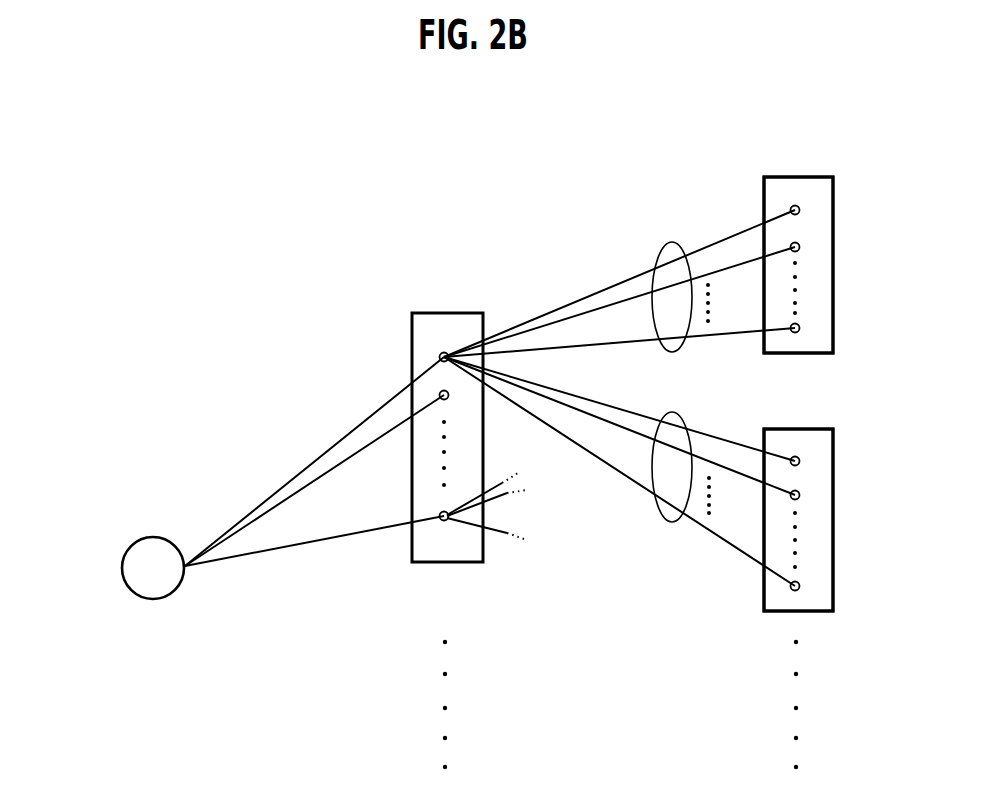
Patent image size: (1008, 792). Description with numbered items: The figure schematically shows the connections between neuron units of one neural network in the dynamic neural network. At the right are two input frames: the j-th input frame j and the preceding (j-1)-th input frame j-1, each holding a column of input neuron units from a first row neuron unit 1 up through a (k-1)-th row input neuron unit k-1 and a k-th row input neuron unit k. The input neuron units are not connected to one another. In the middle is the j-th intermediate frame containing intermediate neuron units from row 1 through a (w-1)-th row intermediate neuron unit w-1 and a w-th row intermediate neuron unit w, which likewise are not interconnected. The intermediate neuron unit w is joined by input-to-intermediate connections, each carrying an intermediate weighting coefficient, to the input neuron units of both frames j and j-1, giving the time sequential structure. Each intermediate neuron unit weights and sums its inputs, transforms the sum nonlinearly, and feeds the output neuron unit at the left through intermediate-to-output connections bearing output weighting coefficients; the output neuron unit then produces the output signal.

The w-th row intermediate neuron unit w is at (439, 357).
The (w-1)-th row intermediate neuron unit w-1 is at (449, 394).
The first row neuron unit 1 is at (440, 514).
The k-th row input neuron unit k is at (800, 210).
The (k-1)-th row input neuron unit k-1 is at (800, 247).
The j-th input frame j is at (827, 286).
The (j-1)-th input frame j-1 is at (828, 541).